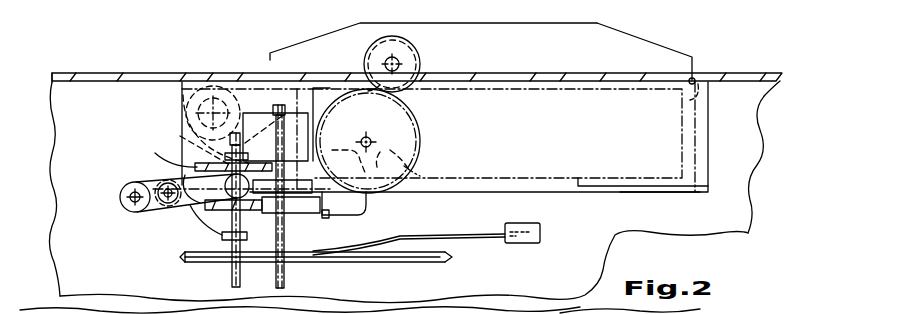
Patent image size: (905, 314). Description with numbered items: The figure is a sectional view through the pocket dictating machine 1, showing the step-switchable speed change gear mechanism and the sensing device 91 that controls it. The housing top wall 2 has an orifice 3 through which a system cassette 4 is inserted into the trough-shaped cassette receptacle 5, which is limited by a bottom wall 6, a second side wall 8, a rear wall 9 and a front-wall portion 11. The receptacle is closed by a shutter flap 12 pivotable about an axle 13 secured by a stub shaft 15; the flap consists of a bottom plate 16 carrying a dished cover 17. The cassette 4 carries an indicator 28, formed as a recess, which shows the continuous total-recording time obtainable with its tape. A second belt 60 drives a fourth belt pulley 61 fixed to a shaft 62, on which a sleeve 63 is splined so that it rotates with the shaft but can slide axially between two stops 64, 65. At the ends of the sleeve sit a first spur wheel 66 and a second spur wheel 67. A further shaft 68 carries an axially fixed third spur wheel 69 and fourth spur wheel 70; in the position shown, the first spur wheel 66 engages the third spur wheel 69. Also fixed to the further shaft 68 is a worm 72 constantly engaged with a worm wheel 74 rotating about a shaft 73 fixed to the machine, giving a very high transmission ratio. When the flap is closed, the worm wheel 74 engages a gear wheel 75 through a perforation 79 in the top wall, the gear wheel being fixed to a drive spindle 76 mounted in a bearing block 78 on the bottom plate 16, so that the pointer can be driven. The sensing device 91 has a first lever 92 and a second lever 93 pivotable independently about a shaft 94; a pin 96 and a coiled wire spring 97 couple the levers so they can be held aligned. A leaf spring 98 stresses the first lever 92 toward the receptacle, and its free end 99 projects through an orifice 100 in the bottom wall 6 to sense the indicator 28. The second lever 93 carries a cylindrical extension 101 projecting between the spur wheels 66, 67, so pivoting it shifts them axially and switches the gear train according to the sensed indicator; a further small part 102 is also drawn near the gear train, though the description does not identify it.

The pocket dictating machine 1 is at (103, 72).
The housing top wall 2 is at (130, 73).
The orifice 3 is at (697, 78).
The system cassette 4 is at (682, 151).
The cassette receptacle 5 is at (692, 193).
The bottom wall 6 is at (589, 188).
The second side wall 8 is at (657, 148).
The rear wall 9 is at (704, 124).
The front-wall portion 11 is at (318, 140).
The shutter flap 12 is at (606, 24).
The axle 13 is at (217, 110).
The stub shaft 15 is at (192, 93).
The bottom plate 16 is at (696, 96).
The dished cover 17 is at (650, 50).
The indicator 28 is at (380, 158).
The second belt 60 is at (396, 268).
The fourth belt pulley 61 is at (212, 263).
The shaft 62 is at (239, 270).
The sleeve 63 is at (180, 136).
The stop 64 is at (216, 237).
The stop 65 is at (183, 118).
The first spur wheel 66 is at (213, 206).
The second spur wheel 67 is at (160, 160).
The further shaft 68 is at (285, 276).
The third spur wheel 69 is at (303, 212).
The fourth spur wheel 70 is at (362, 197).
The worm 72 is at (253, 117).
The shaft 73 is at (368, 138).
The worm wheel 74 is at (410, 118).
The gear wheel 75 is at (421, 66).
The drive spindle 76 is at (399, 62).
The bearing block 78 is at (378, 62).
The perforation 79 is at (362, 86).
The sensing device 91 is at (137, 218).
The first lever 92 is at (350, 247).
The second lever 93 is at (124, 183).
The shaft 94 is at (120, 198).
The pin 96 is at (160, 185).
The coiled wire spring 97 is at (156, 182).
The leaf spring 98 is at (452, 233).
The free end 99 is at (350, 147).
The orifice 100 is at (413, 170).
The cylindrical extension 101 is at (183, 208).
The stop 102 is at (330, 214).